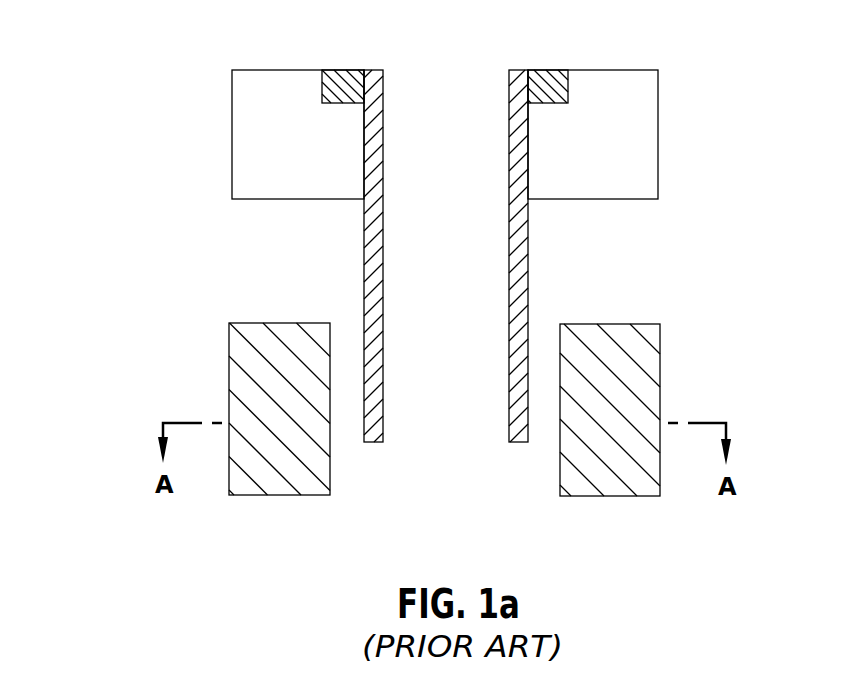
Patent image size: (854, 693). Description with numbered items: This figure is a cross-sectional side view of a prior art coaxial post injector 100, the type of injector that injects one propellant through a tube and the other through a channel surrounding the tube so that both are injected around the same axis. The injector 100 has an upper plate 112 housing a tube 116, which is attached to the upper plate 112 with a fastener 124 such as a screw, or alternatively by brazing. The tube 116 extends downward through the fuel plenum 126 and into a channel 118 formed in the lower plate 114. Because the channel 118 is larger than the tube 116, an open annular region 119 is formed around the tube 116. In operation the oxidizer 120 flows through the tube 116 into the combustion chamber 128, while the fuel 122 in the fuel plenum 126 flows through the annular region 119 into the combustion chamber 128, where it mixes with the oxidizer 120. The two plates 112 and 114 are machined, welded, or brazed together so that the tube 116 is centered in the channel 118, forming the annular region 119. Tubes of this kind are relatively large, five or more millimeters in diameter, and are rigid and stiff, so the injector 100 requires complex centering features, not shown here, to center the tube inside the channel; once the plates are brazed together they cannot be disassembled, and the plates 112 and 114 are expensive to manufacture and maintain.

The prior art coaxial injector 100 is at (136, 188).
The upper plate 112 is at (643, 135).
The lower plate 114 is at (638, 358).
The tube 116 is at (525, 237).
The channel 118 is at (328, 445).
The annular region 119 is at (340, 381).
The oxidizer 120 is at (422, 80).
The fuel 122 is at (342, 312).
The fastener 124 is at (550, 82).
The fuel plenum 126 is at (258, 240).
The combustion chamber 128 is at (470, 555).